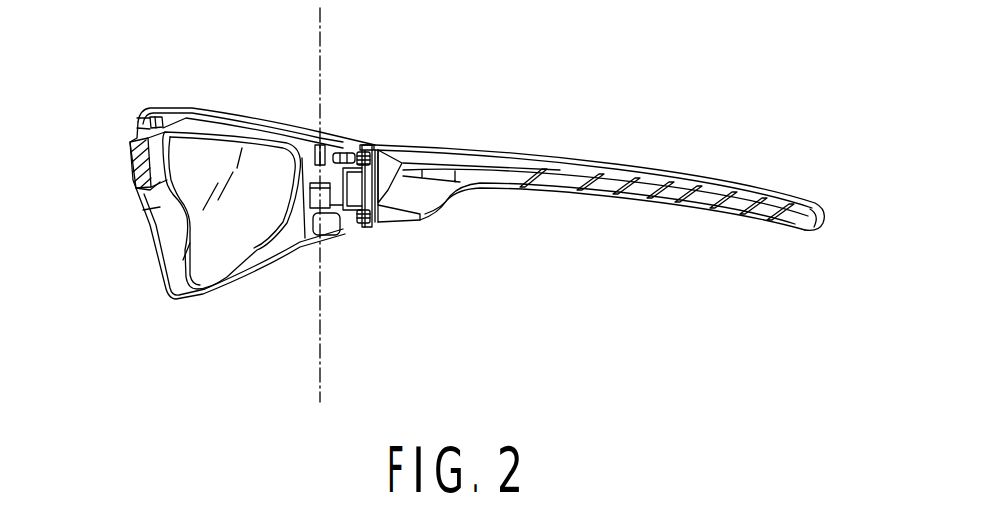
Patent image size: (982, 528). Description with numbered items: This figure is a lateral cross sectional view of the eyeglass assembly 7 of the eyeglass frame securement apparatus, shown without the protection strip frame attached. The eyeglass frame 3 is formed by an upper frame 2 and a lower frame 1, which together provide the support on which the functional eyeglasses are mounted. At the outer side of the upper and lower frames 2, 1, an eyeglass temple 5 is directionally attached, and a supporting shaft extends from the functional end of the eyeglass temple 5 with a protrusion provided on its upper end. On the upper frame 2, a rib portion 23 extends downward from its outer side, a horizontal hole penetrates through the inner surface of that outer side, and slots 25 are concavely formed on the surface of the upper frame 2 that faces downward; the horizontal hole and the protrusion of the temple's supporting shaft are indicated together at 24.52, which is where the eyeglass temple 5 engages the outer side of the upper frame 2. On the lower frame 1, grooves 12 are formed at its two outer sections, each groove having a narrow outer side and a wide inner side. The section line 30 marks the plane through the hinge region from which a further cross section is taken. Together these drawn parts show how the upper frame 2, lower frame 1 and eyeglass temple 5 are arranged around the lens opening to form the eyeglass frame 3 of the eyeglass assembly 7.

The lower frame 1 is at (167, 260).
The upper frame 2 is at (218, 123).
The eyeglass frame 3 is at (118, 188).
The eyeglass temple 5 is at (447, 188).
The eyeglass assembly 7 is at (580, 97).
The grooves 12 is at (318, 198).
The rib portion 23 is at (330, 187).
The horizontal hole and protrusion 24.52 is at (360, 156).
The slots 25 is at (158, 120).
The section line 30 is at (322, 17).